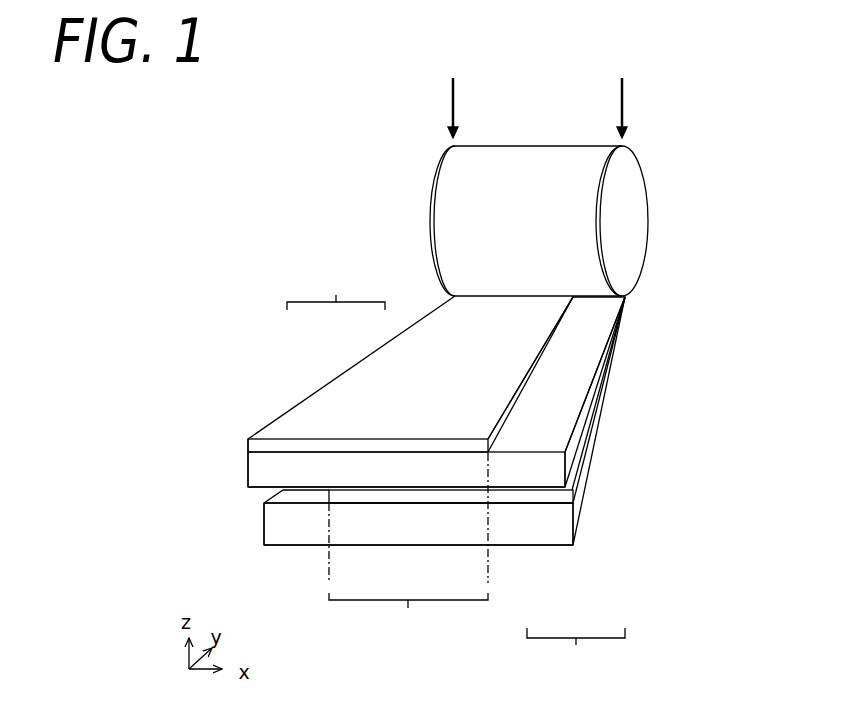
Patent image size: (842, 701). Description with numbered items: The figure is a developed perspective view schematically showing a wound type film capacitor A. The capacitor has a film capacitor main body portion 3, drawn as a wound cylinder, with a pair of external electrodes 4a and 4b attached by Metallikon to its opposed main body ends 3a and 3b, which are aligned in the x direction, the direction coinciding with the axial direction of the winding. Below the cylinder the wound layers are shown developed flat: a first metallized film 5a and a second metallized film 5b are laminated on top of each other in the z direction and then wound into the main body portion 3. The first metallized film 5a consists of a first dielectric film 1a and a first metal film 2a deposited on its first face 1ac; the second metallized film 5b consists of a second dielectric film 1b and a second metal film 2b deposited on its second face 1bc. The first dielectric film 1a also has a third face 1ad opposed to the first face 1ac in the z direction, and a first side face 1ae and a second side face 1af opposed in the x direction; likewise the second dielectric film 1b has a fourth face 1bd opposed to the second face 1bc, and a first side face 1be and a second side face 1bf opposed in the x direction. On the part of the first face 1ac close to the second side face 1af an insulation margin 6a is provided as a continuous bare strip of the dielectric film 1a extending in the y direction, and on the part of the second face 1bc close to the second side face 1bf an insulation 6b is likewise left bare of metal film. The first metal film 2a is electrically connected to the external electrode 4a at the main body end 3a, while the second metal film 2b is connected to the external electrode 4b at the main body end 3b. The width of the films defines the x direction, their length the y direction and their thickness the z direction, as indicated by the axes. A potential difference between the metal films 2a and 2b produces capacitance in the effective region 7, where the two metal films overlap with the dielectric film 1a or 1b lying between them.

The wound type film capacitor A is at (680, 117).
The film capacitor main body portion 3 is at (538, 156).
The main body end 3a is at (453, 93).
The main body end 3b is at (622, 93).
The external electrode 4a is at (432, 216).
The external electrode 4b is at (640, 205).
The first metallized film 5a is at (336, 288).
The second metallized film 5b is at (576, 655).
The first dielectric film 1a is at (345, 472).
The second dielectric film 1b is at (510, 525).
The first metal film 2a is at (385, 452).
The second metal film 2b is at (532, 497).
The insulation margin 6a is at (570, 383).
The insulation 6b is at (293, 501).
The effective region 7 is at (408, 555).
The first face 1ac is at (268, 425).
The third face 1ad is at (320, 488).
The first side face 1ae is at (248, 468).
The second side face 1af is at (570, 455).
The second face 1bc is at (556, 503).
The fourth face 1bd is at (547, 545).
The first side face 1be is at (580, 514).
The second side face 1bf is at (263, 537).